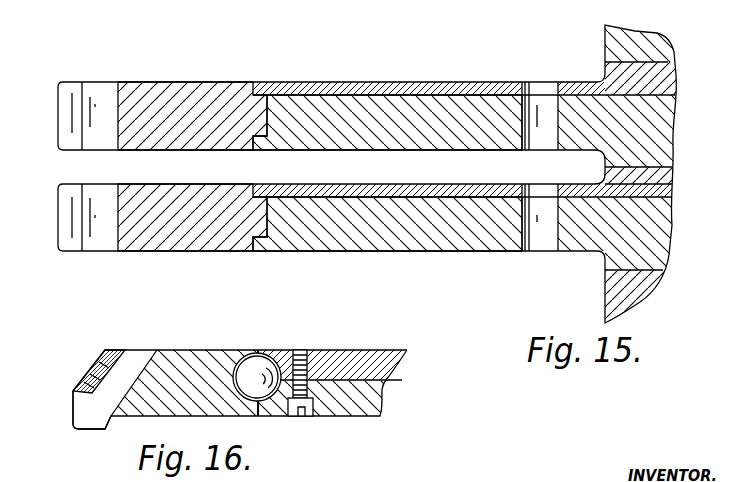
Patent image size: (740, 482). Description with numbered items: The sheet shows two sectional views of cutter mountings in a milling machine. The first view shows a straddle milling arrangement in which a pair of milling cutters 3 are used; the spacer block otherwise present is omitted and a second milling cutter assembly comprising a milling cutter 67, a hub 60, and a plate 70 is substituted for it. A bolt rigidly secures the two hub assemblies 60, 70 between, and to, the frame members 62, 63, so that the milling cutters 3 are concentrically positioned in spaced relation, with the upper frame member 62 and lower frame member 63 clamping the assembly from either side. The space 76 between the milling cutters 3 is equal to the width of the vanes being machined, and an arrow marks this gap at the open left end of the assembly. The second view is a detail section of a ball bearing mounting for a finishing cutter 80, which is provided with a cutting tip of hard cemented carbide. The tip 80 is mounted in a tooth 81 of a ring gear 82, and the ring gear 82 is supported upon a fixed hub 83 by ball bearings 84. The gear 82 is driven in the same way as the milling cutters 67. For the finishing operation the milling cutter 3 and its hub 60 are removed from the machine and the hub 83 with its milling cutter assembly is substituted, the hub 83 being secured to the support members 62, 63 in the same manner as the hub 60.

In FIG. 15, the milling cutter 3 is at (240, 83).
In FIG. 15, the hub 60 is at (348, 142).
In FIG. 15, the frame member 62 is at (643, 38).
In FIG. 15, the frame member 63 is at (650, 293).
In FIG. 15, the milling cutter 67 is at (177, 82).
In FIG. 15, the plate 70 is at (407, 93).
In FIG. 15, the space 76 is at (76, 165).
In FIG. 16, the finishing cutter 80 is at (93, 430).
In FIG. 16, the tooth 81 is at (128, 350).
In FIG. 16, the ring gear 82 is at (210, 330).
In FIG. 16, the fixed hub 83 is at (333, 350).
In FIG. 16, the ball bearing 84 is at (262, 363).